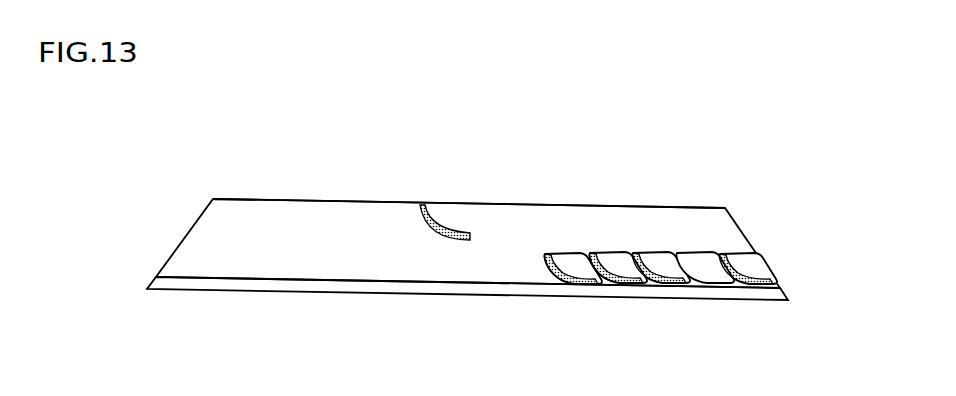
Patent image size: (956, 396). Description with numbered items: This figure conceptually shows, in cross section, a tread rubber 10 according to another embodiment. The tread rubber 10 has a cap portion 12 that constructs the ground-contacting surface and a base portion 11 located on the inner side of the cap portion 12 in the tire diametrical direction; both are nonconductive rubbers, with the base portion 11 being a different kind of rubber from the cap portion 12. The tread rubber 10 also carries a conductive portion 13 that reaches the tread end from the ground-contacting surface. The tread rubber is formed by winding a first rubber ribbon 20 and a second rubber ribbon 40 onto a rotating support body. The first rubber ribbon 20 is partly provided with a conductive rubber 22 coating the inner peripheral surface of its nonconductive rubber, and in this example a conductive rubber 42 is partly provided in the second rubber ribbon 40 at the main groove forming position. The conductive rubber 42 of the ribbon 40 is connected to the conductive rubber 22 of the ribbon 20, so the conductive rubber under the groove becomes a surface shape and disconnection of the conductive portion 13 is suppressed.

The tread rubber 10 is at (337, 200).
The base portion 11 is at (258, 283).
The cap portion 12 is at (259, 212).
The conductive portion 13 is at (457, 228).
The first rubber ribbon 20 is at (568, 254).
The conductive rubber 22 is at (556, 283).
The second rubber ribbon 40 is at (617, 255).
The conductive rubber 42 is at (622, 283).